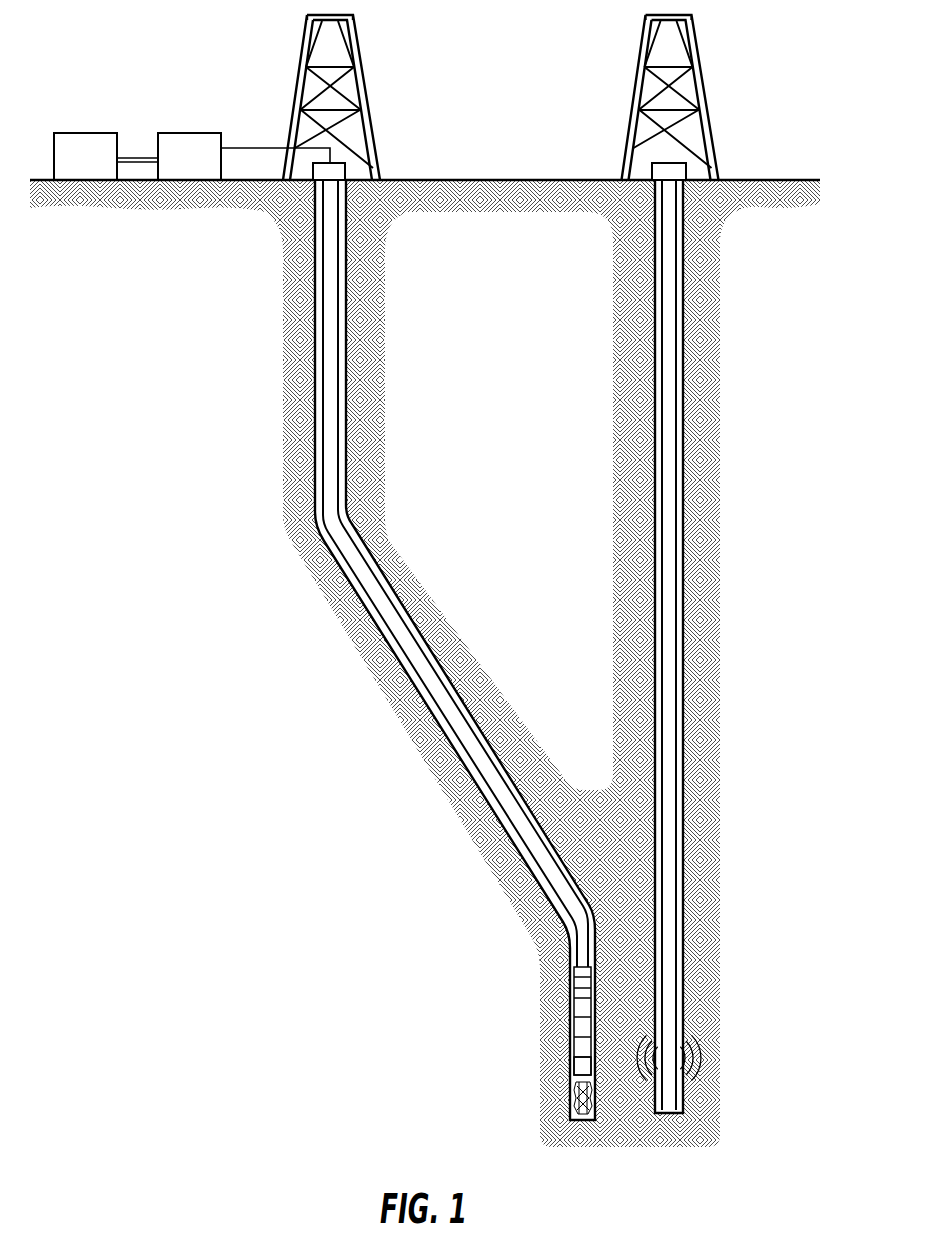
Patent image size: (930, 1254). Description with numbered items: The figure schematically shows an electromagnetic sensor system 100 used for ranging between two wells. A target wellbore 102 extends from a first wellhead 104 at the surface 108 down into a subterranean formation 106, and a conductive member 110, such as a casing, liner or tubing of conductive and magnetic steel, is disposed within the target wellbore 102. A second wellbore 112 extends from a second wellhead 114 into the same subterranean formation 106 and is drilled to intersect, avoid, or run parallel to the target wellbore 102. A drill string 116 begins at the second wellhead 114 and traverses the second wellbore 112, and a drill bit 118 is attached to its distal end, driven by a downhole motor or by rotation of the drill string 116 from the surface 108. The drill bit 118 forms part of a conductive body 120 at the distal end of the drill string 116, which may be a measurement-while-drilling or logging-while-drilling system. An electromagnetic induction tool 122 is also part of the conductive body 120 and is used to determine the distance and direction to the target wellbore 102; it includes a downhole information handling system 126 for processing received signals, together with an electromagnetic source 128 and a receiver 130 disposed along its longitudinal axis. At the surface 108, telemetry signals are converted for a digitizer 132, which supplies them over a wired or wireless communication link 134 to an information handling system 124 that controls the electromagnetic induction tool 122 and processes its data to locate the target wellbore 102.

The electromagnetic sensor system 100 is at (273, 708).
The target wellbore 102 is at (688, 341).
The first wellhead 104 is at (688, 172).
The subterranean formation 106 is at (621, 845).
The surface 108 is at (500, 180).
The conductive member 110 is at (677, 503).
The second wellbore 112 is at (313, 322).
The second wellhead 114 is at (348, 172).
The drill string 116 is at (380, 612).
The drill bit 118 is at (575, 1100).
The conductive body 120 is at (547, 1047).
The electromagnetic induction tool 122 is at (574, 1005).
The information handling system 124 is at (107, 170).
The downhole information handling system 126 is at (575, 967).
The electromagnetic source 128 is at (574, 990).
The receiver 130 is at (573, 1064).
The digitizer 132 is at (211, 170).
The communication link 134 is at (137, 160).